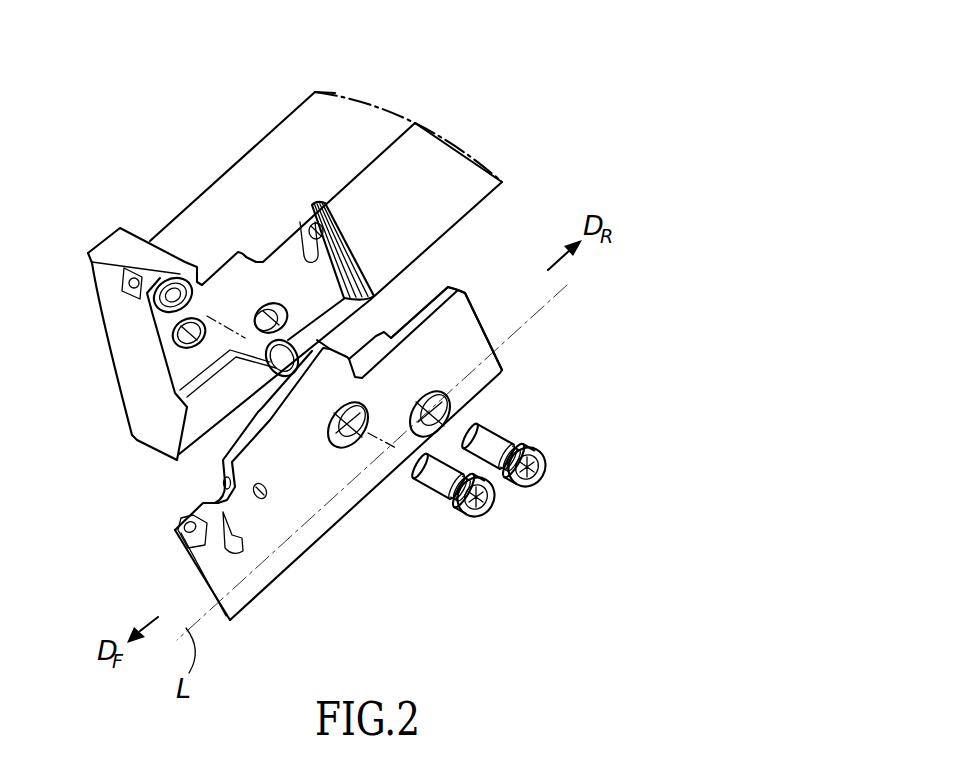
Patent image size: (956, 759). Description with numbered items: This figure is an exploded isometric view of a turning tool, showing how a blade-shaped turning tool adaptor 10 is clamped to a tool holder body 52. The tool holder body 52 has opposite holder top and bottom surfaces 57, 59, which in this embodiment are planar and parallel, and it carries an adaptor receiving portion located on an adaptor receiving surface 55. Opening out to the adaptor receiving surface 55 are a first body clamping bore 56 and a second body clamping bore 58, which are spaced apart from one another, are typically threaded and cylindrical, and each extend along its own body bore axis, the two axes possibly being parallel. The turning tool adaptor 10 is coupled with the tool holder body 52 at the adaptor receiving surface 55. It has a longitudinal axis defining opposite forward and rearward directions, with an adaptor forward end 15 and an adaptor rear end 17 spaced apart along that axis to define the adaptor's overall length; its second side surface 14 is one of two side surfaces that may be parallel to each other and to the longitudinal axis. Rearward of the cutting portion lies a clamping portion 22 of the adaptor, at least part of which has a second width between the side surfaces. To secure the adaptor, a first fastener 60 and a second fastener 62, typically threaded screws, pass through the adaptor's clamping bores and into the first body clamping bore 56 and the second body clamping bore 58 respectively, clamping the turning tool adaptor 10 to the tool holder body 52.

The turning tool adaptor 10 is at (307, 448).
The second side surface 14 is at (267, 540).
The adaptor forward end 15 is at (200, 577).
The adaptor rear end 17 is at (488, 332).
The clamping portion 22 is at (428, 298).
The tool holder body 52 is at (327, 235).
The adaptor receiving surface 55 is at (234, 292).
The first body clamping bore 56 is at (176, 337).
The holder top surface 57 is at (303, 152).
The second body clamping bore 58 is at (277, 290).
The holder bottom surface 59 is at (487, 192).
The first fastener 60 is at (432, 492).
The second fastener 62 is at (500, 428).